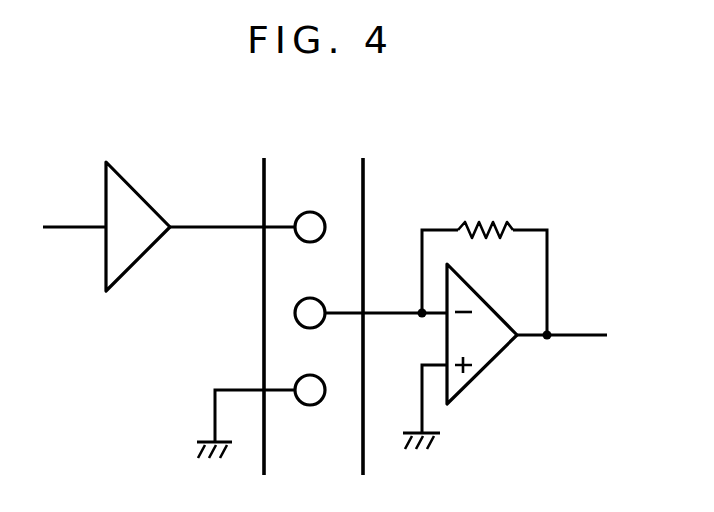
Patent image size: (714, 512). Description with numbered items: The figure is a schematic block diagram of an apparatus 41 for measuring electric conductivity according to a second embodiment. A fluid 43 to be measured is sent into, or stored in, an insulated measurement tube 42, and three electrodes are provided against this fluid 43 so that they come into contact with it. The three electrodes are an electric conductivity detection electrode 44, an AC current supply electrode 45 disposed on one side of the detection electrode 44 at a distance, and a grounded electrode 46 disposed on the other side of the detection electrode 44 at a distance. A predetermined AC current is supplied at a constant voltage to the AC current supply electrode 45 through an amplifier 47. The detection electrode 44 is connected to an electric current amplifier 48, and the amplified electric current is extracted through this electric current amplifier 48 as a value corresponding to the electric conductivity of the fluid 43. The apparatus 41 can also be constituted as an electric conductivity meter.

The apparatus for measuring electric conductivity 41 is at (284, 289).
The measurement tube 42 is at (263, 198).
The fluid to be measured 43 is at (310, 188).
The electric conductivity detection electrode 44 is at (322, 303).
The AC current supply electrode 45 is at (340, 202).
The grounded electrode 46 is at (322, 379).
The amplifier 47 is at (130, 186).
The electric current amplifier 48 is at (511, 222).